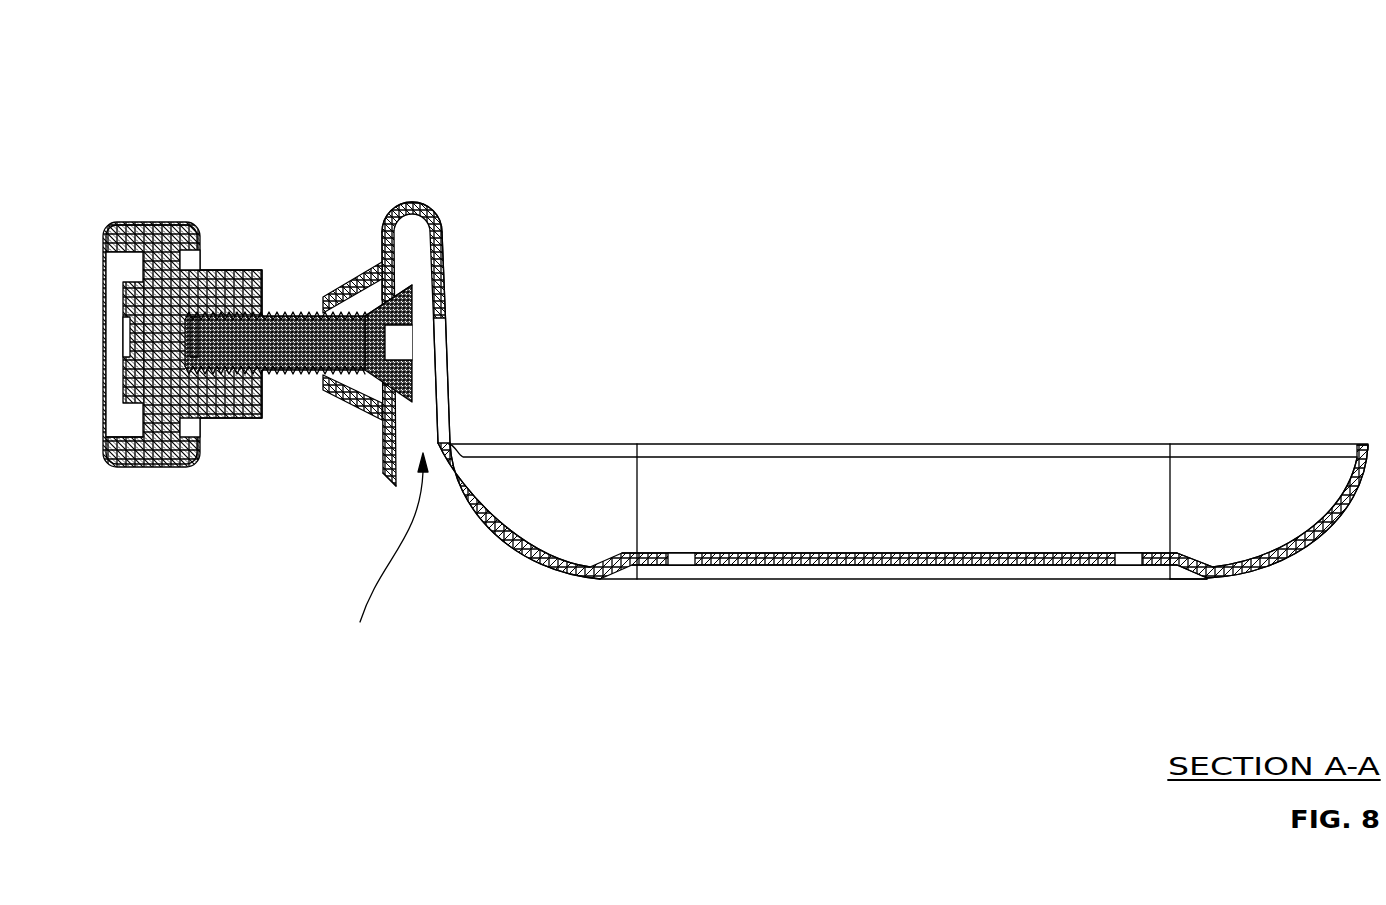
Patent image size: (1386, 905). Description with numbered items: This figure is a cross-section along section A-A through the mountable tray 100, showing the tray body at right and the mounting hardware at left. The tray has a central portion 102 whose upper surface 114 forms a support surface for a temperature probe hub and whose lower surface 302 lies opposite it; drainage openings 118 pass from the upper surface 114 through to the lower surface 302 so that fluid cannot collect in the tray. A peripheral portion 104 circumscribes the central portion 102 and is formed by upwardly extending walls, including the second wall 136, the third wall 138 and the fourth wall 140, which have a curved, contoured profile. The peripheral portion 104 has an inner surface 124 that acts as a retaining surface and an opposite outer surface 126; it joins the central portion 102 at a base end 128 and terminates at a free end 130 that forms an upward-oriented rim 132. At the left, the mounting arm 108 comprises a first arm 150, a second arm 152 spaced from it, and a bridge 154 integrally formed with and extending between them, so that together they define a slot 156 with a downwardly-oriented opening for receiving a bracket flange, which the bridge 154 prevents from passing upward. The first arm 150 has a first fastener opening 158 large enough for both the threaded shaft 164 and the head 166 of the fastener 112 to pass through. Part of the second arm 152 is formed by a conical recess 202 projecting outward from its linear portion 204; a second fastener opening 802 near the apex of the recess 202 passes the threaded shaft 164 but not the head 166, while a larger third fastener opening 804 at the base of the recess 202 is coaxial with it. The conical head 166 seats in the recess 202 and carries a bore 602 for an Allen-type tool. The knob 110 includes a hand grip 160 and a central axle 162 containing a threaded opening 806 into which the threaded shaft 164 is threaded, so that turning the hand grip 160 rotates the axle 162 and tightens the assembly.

The mountable tray 100 is at (1020, 107).
The central portion 102 is at (920, 565).
The peripheral portion 104 is at (940, 443).
The mounting arm 108 is at (446, 272).
The knob 110 is at (180, 222).
The fastener 112 is at (302, 314).
The upper surface 114 is at (843, 552).
The drainage openings 118 is at (682, 560).
The inner surface 124 is at (1308, 532).
The outer surface 126 is at (1322, 535).
The base end 128 is at (1217, 580).
The free end 130 is at (1363, 445).
The rim 132 is at (1135, 443).
The second wall 136 is at (1020, 495).
The third wall 138 is at (1290, 563).
The fourth wall 140 is at (492, 540).
The first arm 150 is at (442, 243).
The second arm 152 is at (382, 243).
The bridge 154 is at (410, 202).
The slot 156 is at (383, 555).
The first fastener opening 158 is at (440, 327).
The hand grip 160 is at (132, 468).
The axle 162 is at (227, 418).
The threaded shaft 164 is at (283, 375).
The head 166 is at (410, 388).
The recess 202 is at (353, 280).
The linear portion 204 is at (378, 452).
The lower surface 302 is at (792, 567).
The bore 602 is at (412, 355).
The second fastener opening 802 is at (330, 395).
The third fastener opening 804 is at (410, 297).
The threaded opening 806 is at (196, 350).